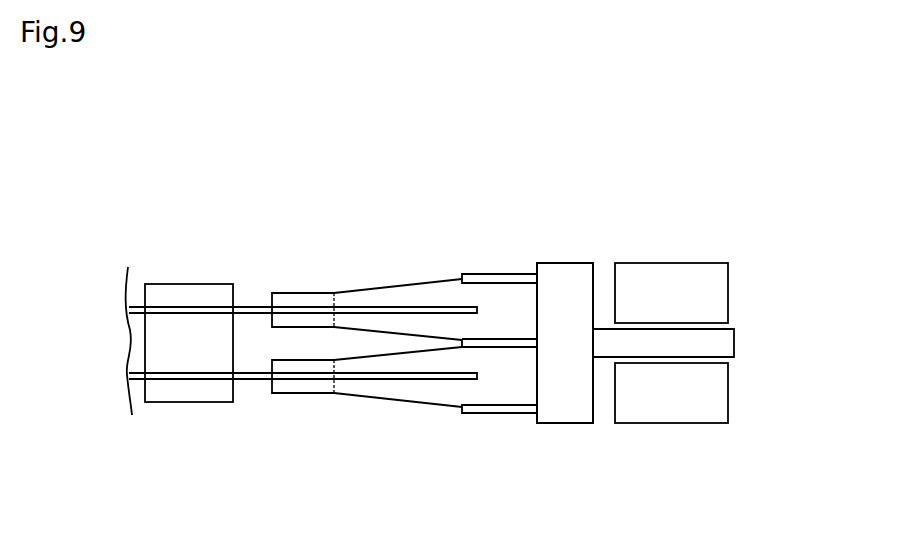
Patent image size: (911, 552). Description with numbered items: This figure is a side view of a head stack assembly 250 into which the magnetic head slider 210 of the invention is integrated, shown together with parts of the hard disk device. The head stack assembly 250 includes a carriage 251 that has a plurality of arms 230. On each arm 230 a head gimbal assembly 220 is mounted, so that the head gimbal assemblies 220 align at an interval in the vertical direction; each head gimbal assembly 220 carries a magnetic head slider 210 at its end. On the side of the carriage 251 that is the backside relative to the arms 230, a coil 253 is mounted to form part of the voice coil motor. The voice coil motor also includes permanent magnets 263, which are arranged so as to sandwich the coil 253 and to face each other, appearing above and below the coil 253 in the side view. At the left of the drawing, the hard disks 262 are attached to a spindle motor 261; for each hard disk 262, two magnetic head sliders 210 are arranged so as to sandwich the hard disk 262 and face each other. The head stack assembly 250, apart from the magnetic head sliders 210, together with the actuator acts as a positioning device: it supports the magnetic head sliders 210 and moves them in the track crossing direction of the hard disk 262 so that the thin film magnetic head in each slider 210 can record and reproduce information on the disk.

The magnetic head slider 210 is at (263, 296).
The head gimbal assembly 220 is at (386, 282).
The arm 230 is at (477, 273).
The head stack assembly 250 is at (567, 233).
The carriage 251 is at (568, 414).
The coil 253 is at (723, 344).
The spindle motor 261 is at (167, 292).
The hard disk 262 is at (245, 298).
The permanent magnet 263 is at (665, 262).